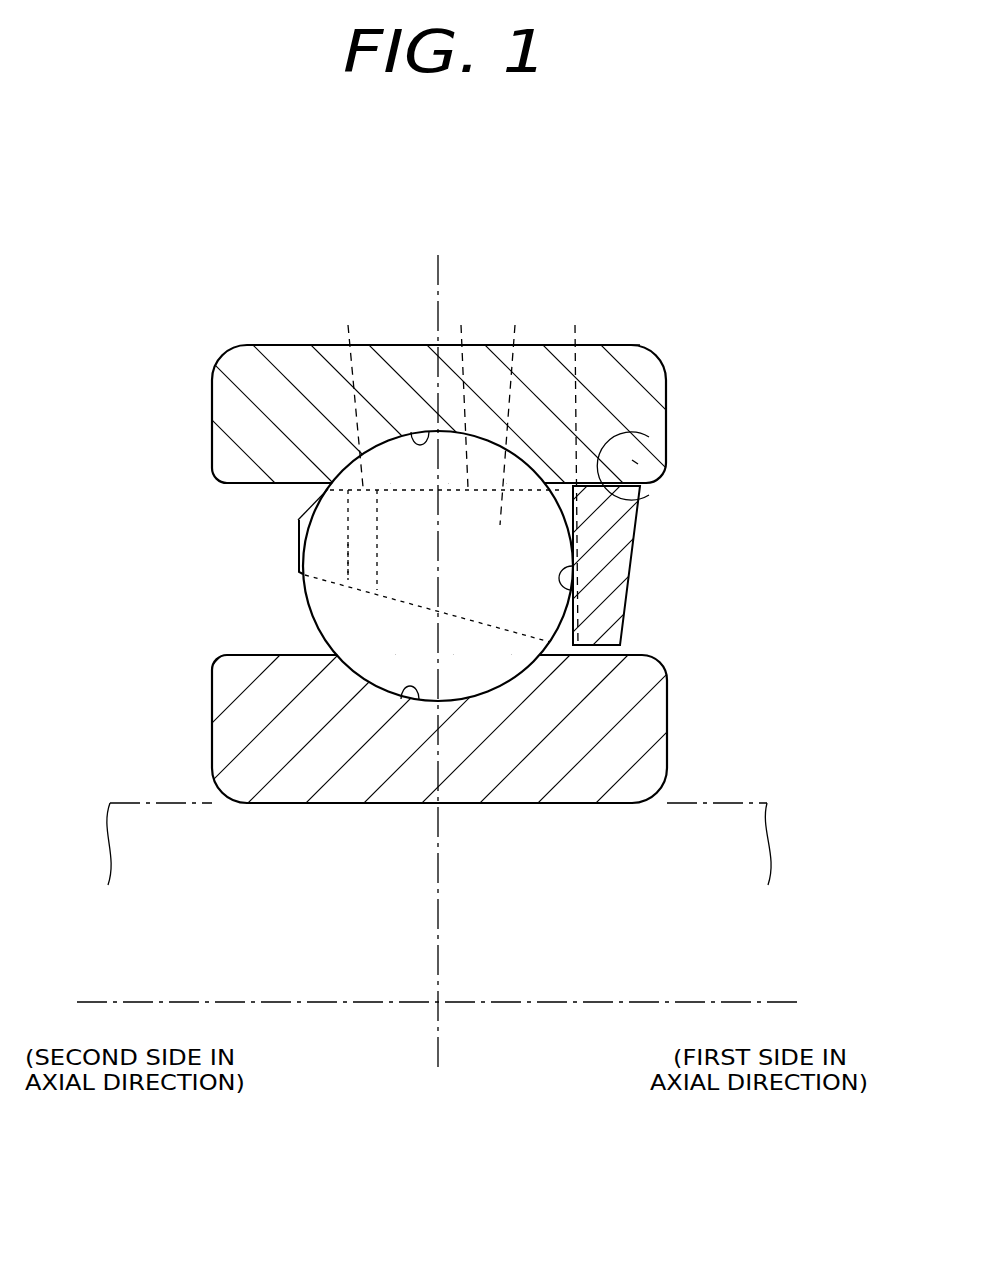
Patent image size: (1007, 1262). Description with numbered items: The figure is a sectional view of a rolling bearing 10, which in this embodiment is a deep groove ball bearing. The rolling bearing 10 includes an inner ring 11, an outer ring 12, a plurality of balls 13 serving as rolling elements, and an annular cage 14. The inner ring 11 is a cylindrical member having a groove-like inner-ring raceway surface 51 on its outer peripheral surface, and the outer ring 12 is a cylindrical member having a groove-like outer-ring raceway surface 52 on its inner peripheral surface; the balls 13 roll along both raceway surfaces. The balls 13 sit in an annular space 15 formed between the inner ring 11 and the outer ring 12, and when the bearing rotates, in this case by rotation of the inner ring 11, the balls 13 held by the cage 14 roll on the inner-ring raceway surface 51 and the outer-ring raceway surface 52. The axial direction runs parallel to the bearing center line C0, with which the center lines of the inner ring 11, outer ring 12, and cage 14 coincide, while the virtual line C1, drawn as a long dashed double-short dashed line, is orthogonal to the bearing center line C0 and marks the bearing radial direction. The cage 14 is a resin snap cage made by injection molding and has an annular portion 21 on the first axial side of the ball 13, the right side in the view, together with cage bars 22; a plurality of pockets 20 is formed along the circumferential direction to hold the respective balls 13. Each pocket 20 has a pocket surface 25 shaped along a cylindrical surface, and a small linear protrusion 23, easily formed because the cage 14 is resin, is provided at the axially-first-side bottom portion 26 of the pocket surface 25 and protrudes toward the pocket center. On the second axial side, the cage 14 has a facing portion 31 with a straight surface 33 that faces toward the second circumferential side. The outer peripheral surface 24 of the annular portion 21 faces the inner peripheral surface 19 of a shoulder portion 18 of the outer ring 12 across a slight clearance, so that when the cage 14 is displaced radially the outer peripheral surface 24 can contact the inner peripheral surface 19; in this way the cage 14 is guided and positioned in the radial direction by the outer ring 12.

The rolling bearing 10 is at (611, 343).
The inner ring 11 is at (212, 712).
The outer ring 12 is at (212, 410).
The balls 13 is at (485, 668).
The cage 14 is at (636, 528).
The annular space 15 is at (280, 607).
The shoulder portion 18 is at (635, 462).
The inner peripheral surface 19 is at (642, 500).
The pocket 20 is at (299, 520).
The annular portion 21 is at (610, 618).
The cage bars 22 is at (467, 384).
The linear protrusion 23 is at (573, 594).
The outer peripheral surface 24 is at (650, 432).
The pocket surface 25 is at (515, 407).
The axially-first-side bottom portion 26 is at (575, 465).
The facing portion 31 is at (348, 388).
The straight surface 33 is at (348, 542).
The inner-ring raceway surface 51 is at (407, 705).
The outer-ring raceway surface 52 is at (420, 445).
The bearing center line C0 is at (752, 1003).
The virtual line C1 is at (440, 268).